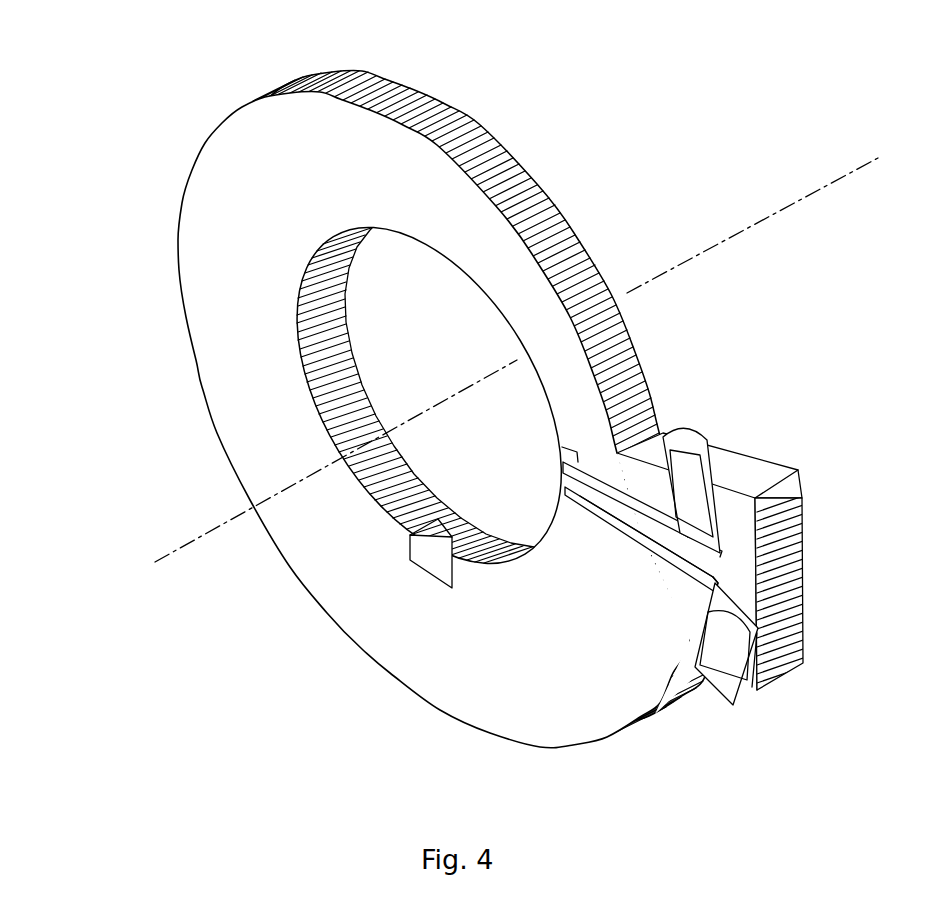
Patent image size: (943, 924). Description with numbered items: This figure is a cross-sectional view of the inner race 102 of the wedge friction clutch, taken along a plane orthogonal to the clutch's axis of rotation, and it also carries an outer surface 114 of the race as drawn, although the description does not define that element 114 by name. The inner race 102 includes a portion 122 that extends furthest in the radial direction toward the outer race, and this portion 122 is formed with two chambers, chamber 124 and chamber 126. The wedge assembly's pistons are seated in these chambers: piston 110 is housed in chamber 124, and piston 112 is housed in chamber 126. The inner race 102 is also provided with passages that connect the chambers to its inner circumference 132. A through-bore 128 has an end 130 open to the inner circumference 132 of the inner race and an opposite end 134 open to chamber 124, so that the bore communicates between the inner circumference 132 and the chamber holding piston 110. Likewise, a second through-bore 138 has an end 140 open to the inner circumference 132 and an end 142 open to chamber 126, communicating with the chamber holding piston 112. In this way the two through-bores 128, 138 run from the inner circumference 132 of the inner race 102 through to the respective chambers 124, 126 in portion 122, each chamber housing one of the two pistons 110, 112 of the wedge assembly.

The inner race 102 is at (431, 391).
The piston 110 is at (690, 431).
The piston 112 is at (713, 695).
The outer surface of magnetic core 114 is at (608, 313).
The portion 122 is at (751, 553).
The chamber 124 is at (692, 508).
The chamber 126 is at (725, 672).
The through-bore 128 is at (585, 458).
The end 130 is at (677, 452).
The inner circumference 132 is at (333, 362).
The end 134 is at (683, 535).
The through-bore 138 is at (608, 528).
The end 140 is at (660, 611).
The end 142 is at (710, 575).